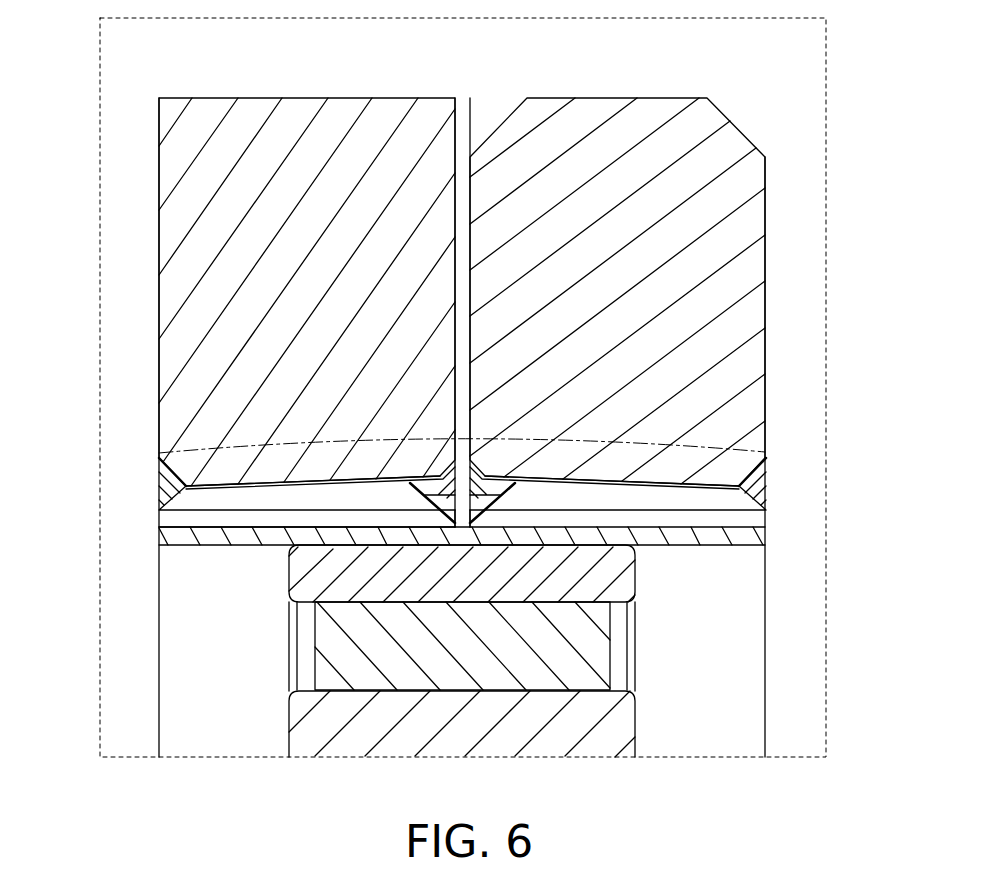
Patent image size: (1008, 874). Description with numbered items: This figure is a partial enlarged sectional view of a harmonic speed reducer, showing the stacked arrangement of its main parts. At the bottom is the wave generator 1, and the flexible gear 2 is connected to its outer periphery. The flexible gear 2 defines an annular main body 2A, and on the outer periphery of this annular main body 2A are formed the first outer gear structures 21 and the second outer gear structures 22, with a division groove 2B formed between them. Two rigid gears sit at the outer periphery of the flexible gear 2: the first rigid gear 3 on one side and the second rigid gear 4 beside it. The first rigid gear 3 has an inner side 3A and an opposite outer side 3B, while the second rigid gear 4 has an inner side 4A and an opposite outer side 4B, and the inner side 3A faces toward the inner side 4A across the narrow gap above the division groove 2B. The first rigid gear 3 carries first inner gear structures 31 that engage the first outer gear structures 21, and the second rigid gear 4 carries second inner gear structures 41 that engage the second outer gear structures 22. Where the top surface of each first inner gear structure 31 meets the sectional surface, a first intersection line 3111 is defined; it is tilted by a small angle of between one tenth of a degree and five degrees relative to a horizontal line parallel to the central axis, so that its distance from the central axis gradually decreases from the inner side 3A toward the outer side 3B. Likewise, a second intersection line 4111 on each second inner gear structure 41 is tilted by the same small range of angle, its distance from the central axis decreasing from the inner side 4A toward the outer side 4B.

The wave generator 1 is at (645, 716).
The flexible gear 2 is at (778, 532).
The annular main body 2A is at (182, 536).
The division groove 2B is at (461, 529).
The first outer gear structures 21 is at (258, 500).
The second outer gear structures 22 is at (668, 503).
The first rigid gear 3 is at (150, 248).
The inner side 3A is at (470, 124).
The outer side 3B is at (146, 175).
The first inner gear structures 31 is at (337, 500).
The first intersection line 3111 is at (216, 512).
The second rigid gear 4 is at (778, 268).
The inner side 4A is at (455, 207).
The outer side 4B is at (778, 183).
The second inner gear structures 41 is at (593, 470).
The second intersection line 4111 is at (707, 512).